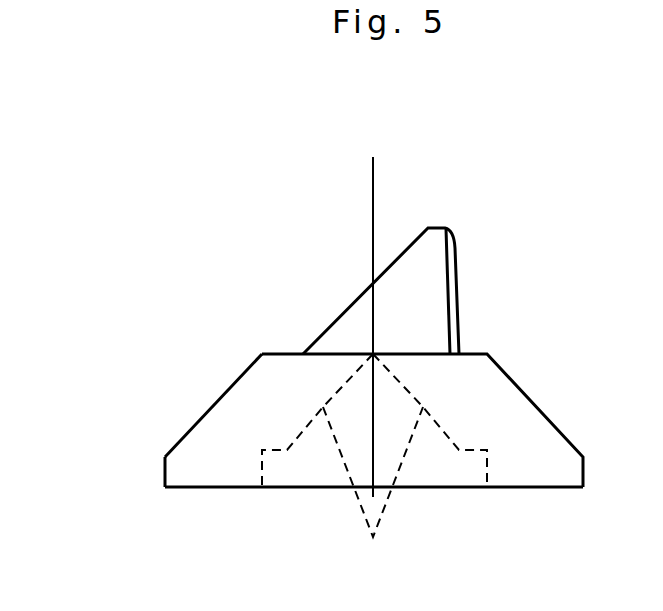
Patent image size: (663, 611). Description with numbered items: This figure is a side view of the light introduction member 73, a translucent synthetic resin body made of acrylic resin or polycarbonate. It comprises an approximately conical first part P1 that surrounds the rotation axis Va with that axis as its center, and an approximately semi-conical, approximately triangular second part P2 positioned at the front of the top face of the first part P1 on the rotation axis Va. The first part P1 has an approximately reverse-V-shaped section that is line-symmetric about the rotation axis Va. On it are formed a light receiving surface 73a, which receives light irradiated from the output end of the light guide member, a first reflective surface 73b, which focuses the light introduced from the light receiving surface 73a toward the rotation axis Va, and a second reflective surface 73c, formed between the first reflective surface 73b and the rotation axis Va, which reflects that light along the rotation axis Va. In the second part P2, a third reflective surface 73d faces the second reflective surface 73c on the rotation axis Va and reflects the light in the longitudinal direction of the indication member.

The light introduction member 73 is at (333, 397).
The light receiving surface 73a is at (220, 488).
The first reflective surface 73b is at (238, 378).
The second reflective surface 73c is at (374, 465).
The third reflective surface 73d is at (342, 310).
The first part P1 is at (330, 443).
The second part P2 is at (331, 280).
The rotation axis Va is at (373, 308).